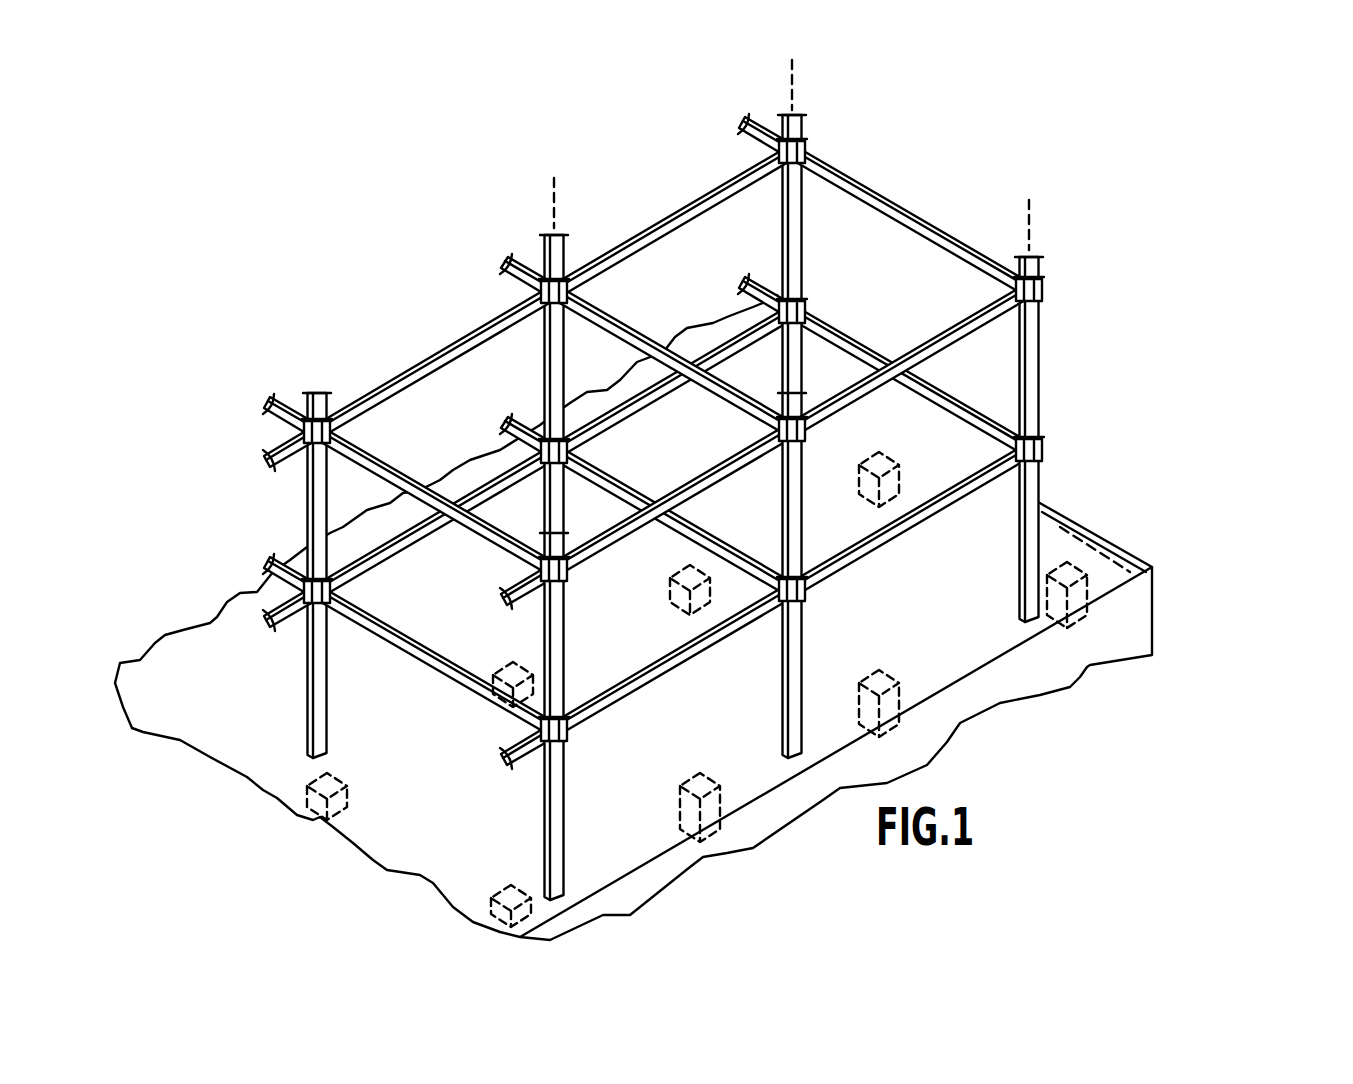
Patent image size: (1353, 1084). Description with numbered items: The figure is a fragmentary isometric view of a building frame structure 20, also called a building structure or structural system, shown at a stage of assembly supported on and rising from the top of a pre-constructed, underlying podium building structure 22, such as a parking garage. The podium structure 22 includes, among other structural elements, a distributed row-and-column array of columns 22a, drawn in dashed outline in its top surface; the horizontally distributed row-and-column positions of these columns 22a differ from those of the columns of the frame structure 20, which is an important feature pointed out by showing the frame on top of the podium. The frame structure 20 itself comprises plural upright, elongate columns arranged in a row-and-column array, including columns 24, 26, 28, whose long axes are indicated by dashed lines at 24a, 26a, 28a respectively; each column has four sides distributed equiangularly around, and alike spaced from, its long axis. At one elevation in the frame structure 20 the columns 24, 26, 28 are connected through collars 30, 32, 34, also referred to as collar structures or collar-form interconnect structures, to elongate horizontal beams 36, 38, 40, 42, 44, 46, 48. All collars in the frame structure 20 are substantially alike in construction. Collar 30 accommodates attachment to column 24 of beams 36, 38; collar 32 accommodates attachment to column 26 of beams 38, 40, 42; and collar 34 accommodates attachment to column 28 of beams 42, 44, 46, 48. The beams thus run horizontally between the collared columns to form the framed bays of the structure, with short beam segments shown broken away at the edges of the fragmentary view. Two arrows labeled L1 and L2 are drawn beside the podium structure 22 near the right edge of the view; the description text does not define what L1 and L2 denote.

The building frame structure 20 is at (1068, 258).
The podium building structure 22 is at (1048, 682).
The columns 22a is at (885, 505).
The column 24 is at (1040, 382).
The column long axis 24a is at (1036, 217).
The column 26 is at (806, 128).
The column long axis 26a is at (799, 76).
The column 28 is at (570, 247).
The column long axis 28a is at (561, 205).
The collar 30 is at (1043, 289).
The collar 32 is at (806, 152).
The collar 34 is at (550, 313).
The horizontal beam 36 is at (922, 337).
The horizontal beam 38 is at (928, 213).
The horizontal beam 40 is at (734, 122).
The horizontal beam 42 is at (684, 202).
The horizontal beam 44 is at (640, 322).
The horizontal beam 46 is at (422, 348).
The horizontal beam 48 is at (492, 262).
The first longitudinal direction L1 is at (1112, 508).
The second longitudinal direction L2 is at (1168, 612).